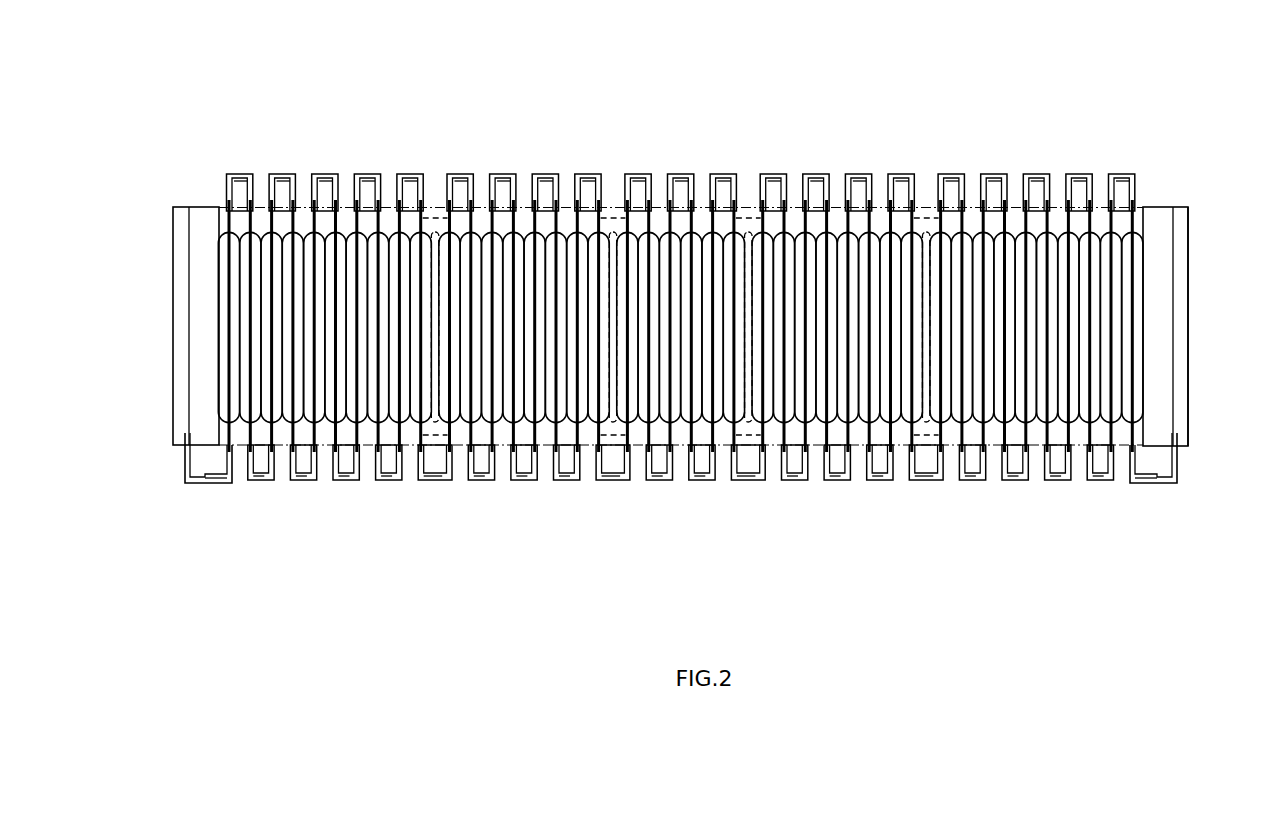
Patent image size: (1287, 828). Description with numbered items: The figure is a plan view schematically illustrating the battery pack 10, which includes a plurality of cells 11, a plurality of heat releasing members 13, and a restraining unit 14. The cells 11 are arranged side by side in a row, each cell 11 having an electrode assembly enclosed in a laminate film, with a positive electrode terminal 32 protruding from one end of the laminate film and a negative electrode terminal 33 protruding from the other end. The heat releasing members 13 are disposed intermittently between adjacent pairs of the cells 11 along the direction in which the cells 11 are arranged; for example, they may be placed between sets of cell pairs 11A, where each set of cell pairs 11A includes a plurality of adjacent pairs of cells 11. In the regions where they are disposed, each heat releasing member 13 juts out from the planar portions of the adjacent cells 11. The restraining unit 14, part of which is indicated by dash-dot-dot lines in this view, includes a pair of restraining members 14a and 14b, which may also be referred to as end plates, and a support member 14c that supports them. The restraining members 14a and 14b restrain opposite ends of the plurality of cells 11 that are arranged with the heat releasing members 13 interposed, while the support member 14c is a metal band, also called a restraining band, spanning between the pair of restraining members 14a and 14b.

The battery pack 10 is at (1064, 122).
The cell 11 is at (218, 313).
The cell pair 11A is at (241, 490).
The heat releasing member 13 is at (434, 172).
The restraining unit 14 is at (1197, 233).
The restraining member 14a is at (205, 207).
The restraining member 14b is at (1160, 207).
The support member 14c is at (1190, 308).
The positive electrode terminal 32 is at (254, 190).
The negative electrode terminal 33 is at (227, 190).